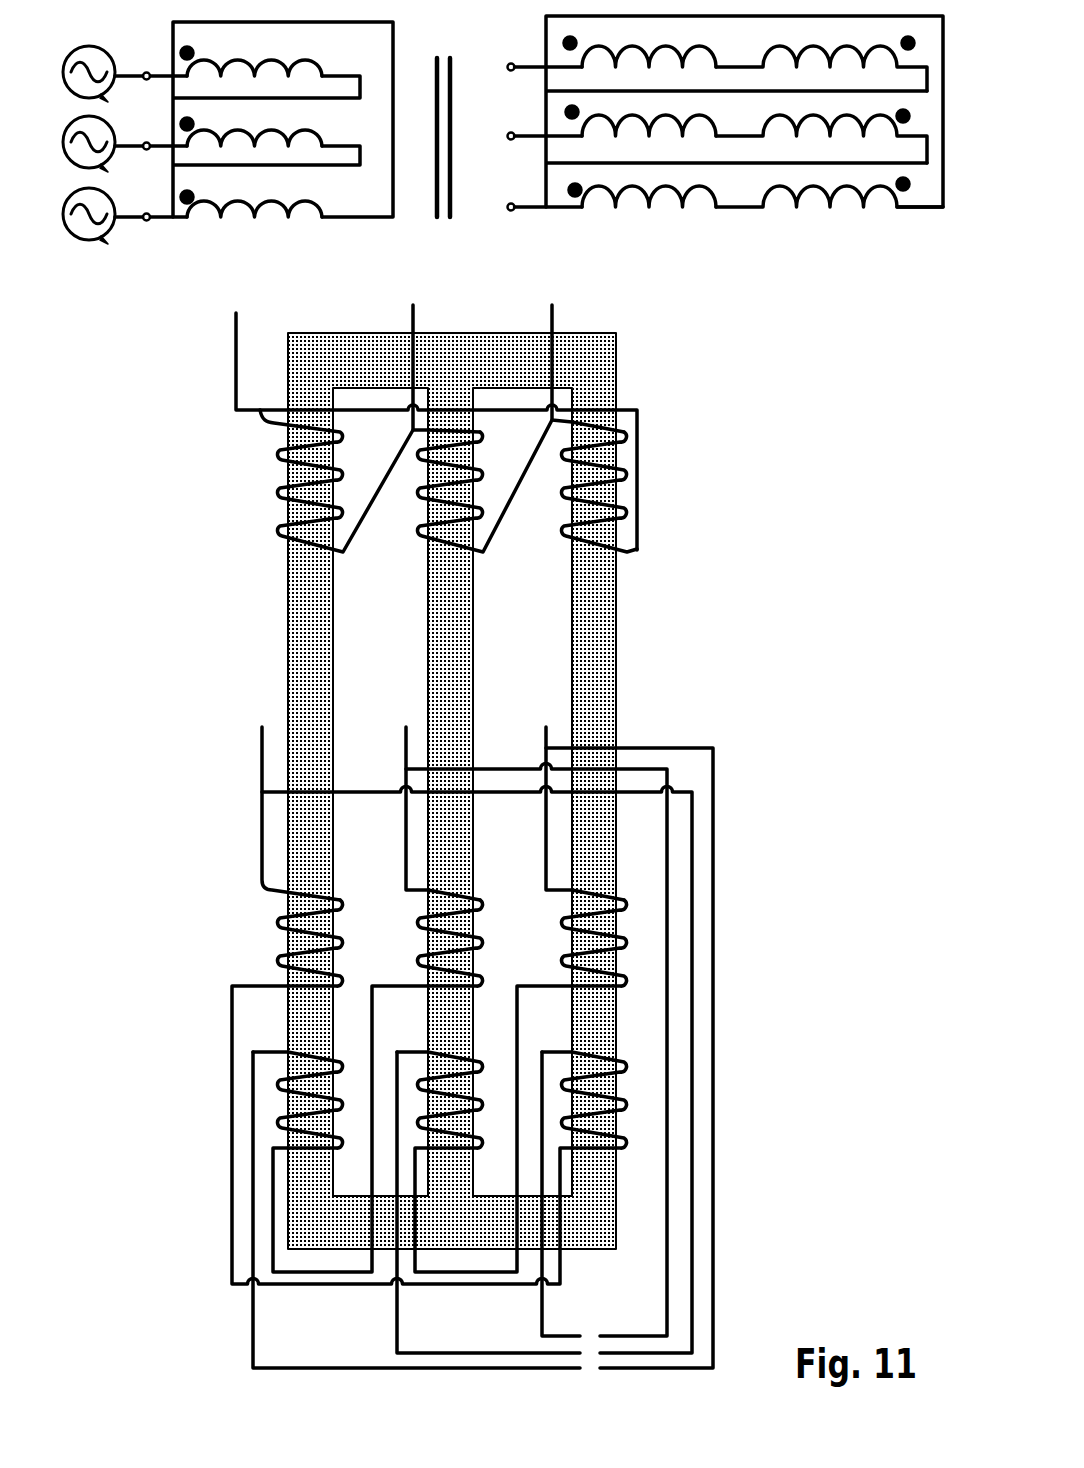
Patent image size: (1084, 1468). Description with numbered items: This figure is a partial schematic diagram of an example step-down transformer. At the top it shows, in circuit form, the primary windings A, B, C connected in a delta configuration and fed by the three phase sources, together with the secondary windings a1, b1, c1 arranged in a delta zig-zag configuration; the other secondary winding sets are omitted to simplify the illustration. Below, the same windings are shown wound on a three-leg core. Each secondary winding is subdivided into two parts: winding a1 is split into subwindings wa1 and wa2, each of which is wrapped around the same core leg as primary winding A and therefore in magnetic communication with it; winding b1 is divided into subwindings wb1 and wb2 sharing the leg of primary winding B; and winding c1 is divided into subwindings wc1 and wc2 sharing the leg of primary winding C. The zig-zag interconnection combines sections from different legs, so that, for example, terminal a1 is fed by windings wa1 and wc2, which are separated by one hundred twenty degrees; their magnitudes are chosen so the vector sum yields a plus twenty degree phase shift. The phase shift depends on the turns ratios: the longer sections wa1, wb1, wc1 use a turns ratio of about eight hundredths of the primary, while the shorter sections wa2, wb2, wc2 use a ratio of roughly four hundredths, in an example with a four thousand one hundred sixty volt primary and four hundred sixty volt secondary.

The primary winding A is at (376, 301).
The primary winding B is at (297, 278).
The primary winding C is at (369, 314).
The secondary winding a1 is at (472, 707).
The secondary winding b1 is at (531, 733).
The secondary winding c1 is at (483, 785).
The subwinding wa1 is at (474, 653).
The subwinding wa2 is at (590, 621).
The subwinding wb1 is at (494, 683).
The subwinding wb2 is at (670, 656).
The subwinding wc1 is at (565, 720).
The subwinding wc2 is at (734, 585).